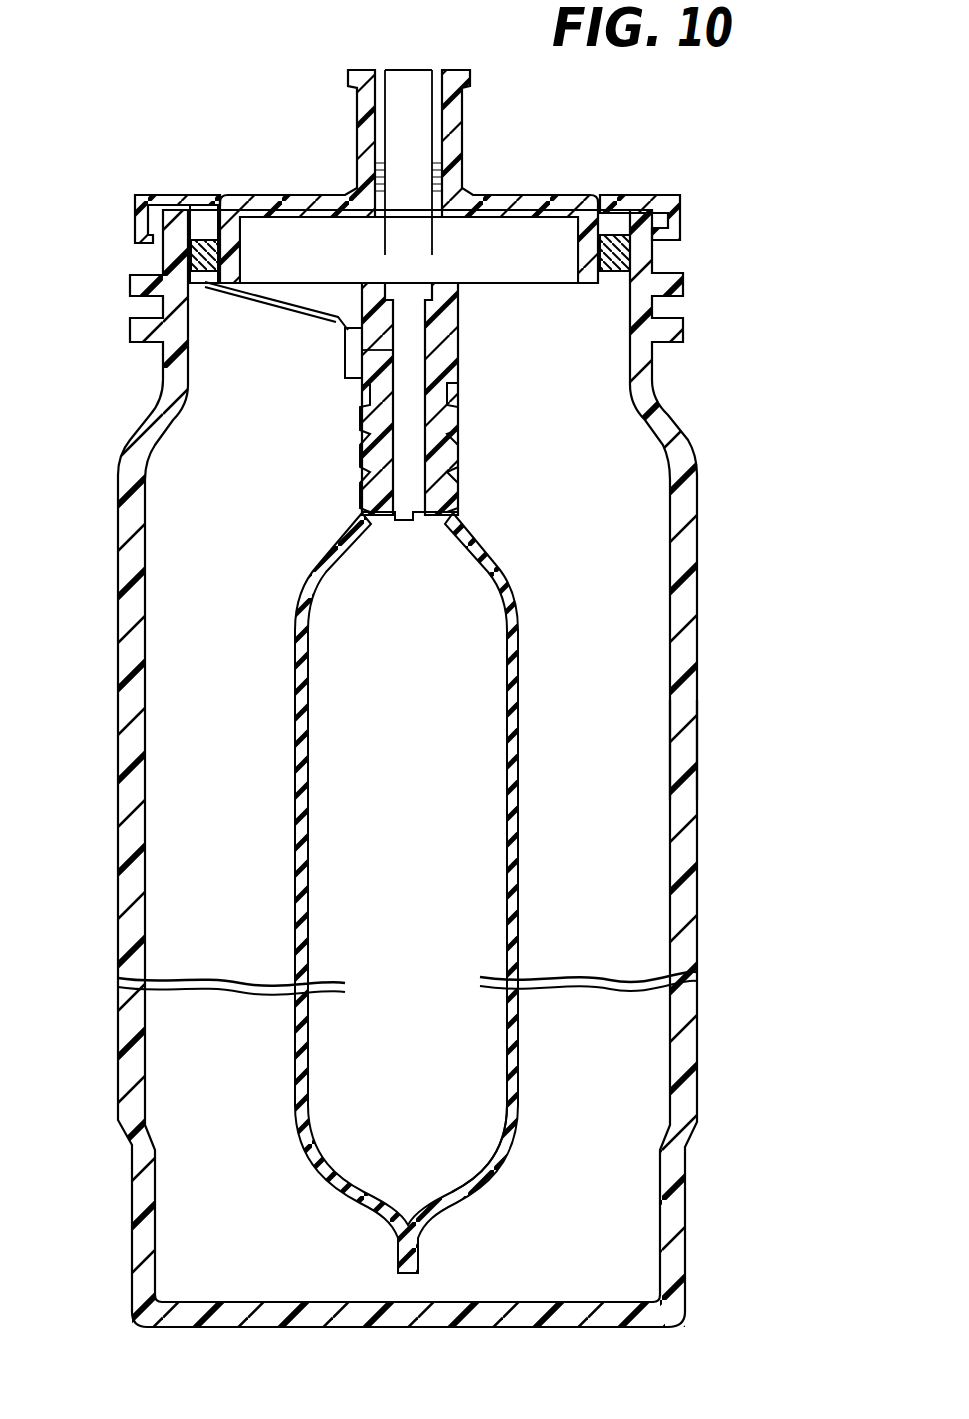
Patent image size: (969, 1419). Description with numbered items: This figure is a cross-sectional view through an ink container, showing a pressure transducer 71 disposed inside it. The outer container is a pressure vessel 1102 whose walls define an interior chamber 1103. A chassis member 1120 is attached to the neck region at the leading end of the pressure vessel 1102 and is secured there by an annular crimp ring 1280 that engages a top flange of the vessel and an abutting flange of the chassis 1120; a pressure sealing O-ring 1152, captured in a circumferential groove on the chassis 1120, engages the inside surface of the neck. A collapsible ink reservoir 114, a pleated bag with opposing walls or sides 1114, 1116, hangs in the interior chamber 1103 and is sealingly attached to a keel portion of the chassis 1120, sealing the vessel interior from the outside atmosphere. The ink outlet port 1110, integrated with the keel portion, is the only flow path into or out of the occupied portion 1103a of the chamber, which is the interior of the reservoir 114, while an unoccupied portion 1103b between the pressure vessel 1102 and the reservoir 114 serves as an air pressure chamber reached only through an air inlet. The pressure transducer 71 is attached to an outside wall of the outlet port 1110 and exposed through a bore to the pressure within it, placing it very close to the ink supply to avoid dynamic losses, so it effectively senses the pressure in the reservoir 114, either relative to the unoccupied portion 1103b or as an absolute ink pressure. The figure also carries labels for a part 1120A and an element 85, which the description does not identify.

The ink outlet port 1110 is at (458, 100).
The chassis member 1120 is at (476, 142).
The annular crimp ring 1280 is at (668, 192).
The cap ring 1120A is at (163, 257).
The pressure sealing O-ring 1152 is at (648, 255).
The wire 85 is at (278, 300).
The pressure transducer 71 is at (344, 354).
The interior chamber 1103 is at (648, 562).
The unoccupied portion 1103b is at (640, 743).
The pressure vessel 1102 is at (401, 768).
The opposing wall 1114 is at (300, 955).
The opposing wall 1116 is at (512, 957).
The collapsible ink reservoir 114 is at (296, 1125).
The occupied portion 1103a is at (485, 1140).